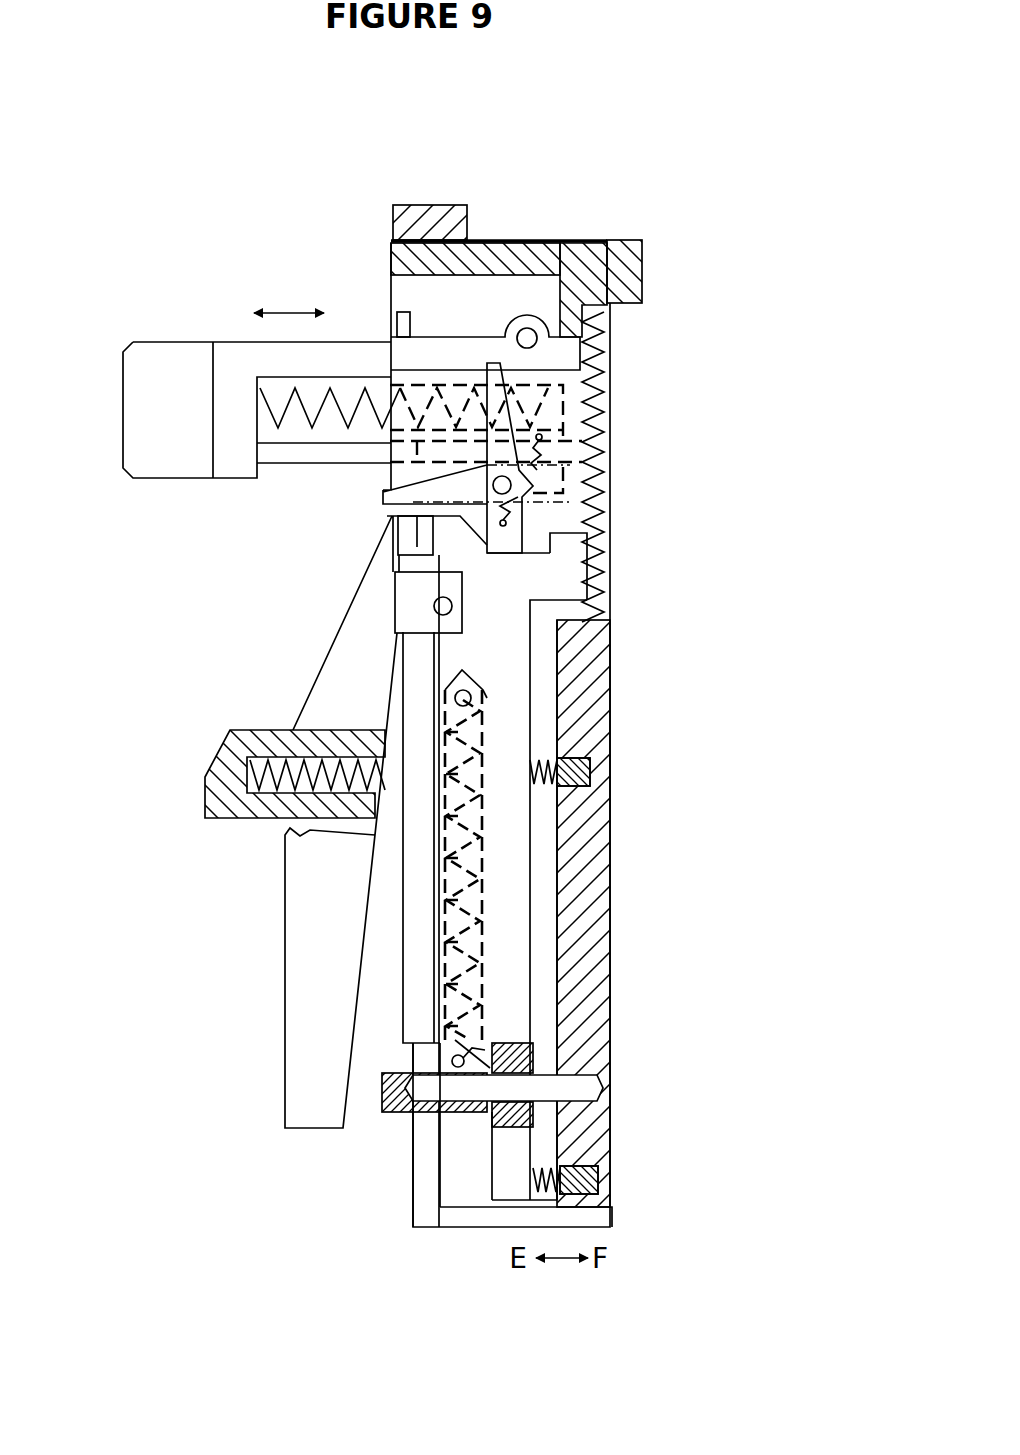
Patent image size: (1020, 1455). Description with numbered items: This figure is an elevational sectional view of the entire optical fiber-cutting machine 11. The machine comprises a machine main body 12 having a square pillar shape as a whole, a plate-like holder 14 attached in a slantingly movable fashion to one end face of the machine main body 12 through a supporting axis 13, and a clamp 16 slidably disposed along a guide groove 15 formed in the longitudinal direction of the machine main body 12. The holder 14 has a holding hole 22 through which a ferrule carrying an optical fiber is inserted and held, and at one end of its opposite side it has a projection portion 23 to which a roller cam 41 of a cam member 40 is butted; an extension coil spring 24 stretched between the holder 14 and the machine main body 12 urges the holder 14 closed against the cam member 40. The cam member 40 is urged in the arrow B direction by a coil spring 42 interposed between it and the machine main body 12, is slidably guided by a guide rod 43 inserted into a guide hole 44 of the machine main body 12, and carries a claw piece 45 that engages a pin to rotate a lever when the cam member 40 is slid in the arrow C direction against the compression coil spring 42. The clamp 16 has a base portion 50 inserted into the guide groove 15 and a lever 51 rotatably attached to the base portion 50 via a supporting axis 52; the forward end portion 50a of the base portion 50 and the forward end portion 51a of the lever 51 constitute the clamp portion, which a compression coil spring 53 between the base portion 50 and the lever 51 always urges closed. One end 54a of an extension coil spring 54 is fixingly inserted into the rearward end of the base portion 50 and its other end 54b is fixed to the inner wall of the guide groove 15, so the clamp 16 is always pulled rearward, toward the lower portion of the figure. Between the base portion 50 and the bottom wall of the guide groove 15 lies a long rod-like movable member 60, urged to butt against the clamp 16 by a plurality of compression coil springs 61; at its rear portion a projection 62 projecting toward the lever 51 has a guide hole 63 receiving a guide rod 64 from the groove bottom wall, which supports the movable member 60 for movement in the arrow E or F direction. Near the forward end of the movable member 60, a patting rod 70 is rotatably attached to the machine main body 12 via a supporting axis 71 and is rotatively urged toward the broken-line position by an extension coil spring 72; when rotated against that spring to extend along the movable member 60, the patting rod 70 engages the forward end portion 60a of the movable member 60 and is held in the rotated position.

The optical fiber-cutting machine 11 is at (138, 206).
The machine main body 12 is at (611, 678).
The supporting axis 13 is at (391, 240).
The holder 14 is at (478, 243).
The guide groove 15 is at (541, 891).
The clamp 16 is at (310, 688).
The holding hole 22 is at (422, 243).
The projection portion 23 is at (575, 335).
The extension coil spring 24 is at (597, 483).
The cam member 40 is at (232, 340).
The roller cam 41 is at (527, 316).
The coil spring 42 is at (325, 432).
The guide rod 43 is at (353, 457).
The guide hole 44 is at (440, 440).
The claw piece 45 is at (391, 290).
The base portion 50 is at (437, 935).
The forward end portion of the base portion 50a is at (397, 570).
The lever 51 is at (310, 918).
The forward end portion of the lever 51a is at (405, 537).
The supporting axis 52 is at (435, 606).
The compression coil spring 53 is at (265, 792).
The extension coil spring 54 is at (455, 992).
The one end of the extension coil spring 54a is at (470, 697).
The another end of the extension coil spring 54b is at (463, 1060).
The movable member 60 is at (513, 847).
The forward end portion of the movable member 60a is at (588, 535).
The compression coil springs 61 is at (592, 760).
The projection 62 is at (392, 1112).
The guide hole 63 is at (450, 1104).
The guide rod 64 is at (600, 1088).
The patting rod 70 is at (493, 400).
The supporting axis 71 is at (520, 490).
The extension coil spring 72 is at (525, 505).